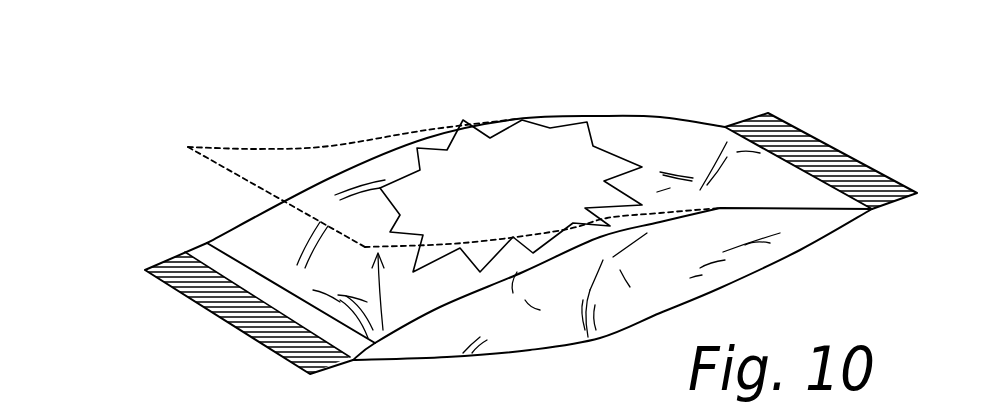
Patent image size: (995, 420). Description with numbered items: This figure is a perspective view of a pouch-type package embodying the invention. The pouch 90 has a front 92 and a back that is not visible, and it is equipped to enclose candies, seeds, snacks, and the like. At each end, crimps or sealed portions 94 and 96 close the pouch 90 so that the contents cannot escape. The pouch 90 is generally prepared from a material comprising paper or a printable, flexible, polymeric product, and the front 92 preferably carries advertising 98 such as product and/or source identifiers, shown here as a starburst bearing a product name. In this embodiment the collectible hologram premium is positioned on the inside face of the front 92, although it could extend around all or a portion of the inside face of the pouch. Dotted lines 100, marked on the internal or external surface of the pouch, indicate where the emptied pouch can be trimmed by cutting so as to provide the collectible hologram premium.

The pouch 90 is at (240, 121).
The front 92 is at (653, 137).
The crimp or sealed portion 94 is at (212, 313).
The crimp or sealed portion 96 is at (820, 137).
The advertising 98 is at (480, 143).
The dotted lines 100 is at (303, 147).